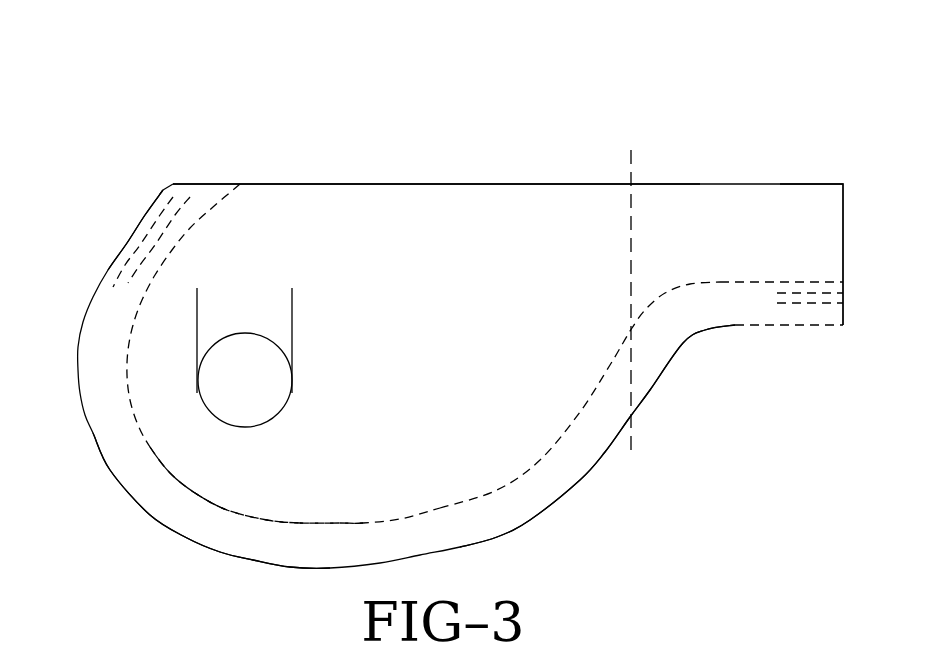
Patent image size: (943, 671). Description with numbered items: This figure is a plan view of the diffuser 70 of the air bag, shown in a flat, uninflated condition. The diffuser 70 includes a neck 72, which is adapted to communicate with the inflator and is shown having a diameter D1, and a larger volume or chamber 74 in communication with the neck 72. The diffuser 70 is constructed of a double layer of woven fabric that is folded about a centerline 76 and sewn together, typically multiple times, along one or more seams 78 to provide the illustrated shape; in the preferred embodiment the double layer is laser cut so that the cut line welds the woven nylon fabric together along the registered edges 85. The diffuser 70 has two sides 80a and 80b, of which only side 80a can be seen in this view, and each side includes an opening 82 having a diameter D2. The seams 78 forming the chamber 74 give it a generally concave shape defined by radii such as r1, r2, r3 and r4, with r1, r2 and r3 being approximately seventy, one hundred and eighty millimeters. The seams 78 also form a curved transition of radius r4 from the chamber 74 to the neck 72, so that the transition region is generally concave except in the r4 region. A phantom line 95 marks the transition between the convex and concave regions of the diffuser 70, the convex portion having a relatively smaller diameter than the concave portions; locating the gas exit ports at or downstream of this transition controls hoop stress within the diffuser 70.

The diffuser 70 is at (236, 119).
The neck 72 is at (813, 205).
The chamber 74 is at (404, 236).
The centerline 76 is at (270, 182).
The seams 78 is at (141, 245).
The side of the diffuser 80a is at (250, 487).
The side of the diffuser 80b is at (270, 503).
The opening 82 is at (273, 415).
The registered edges 85 is at (530, 520).
The phantom line 95 is at (630, 263).
The neck diameter D1 is at (753, 184).
The opening diameter D2 is at (197, 306).
The first radius r1 is at (166, 455).
The second radius r2 is at (365, 518).
The third radius r3 is at (576, 409).
The fourth radius r4 is at (687, 350).